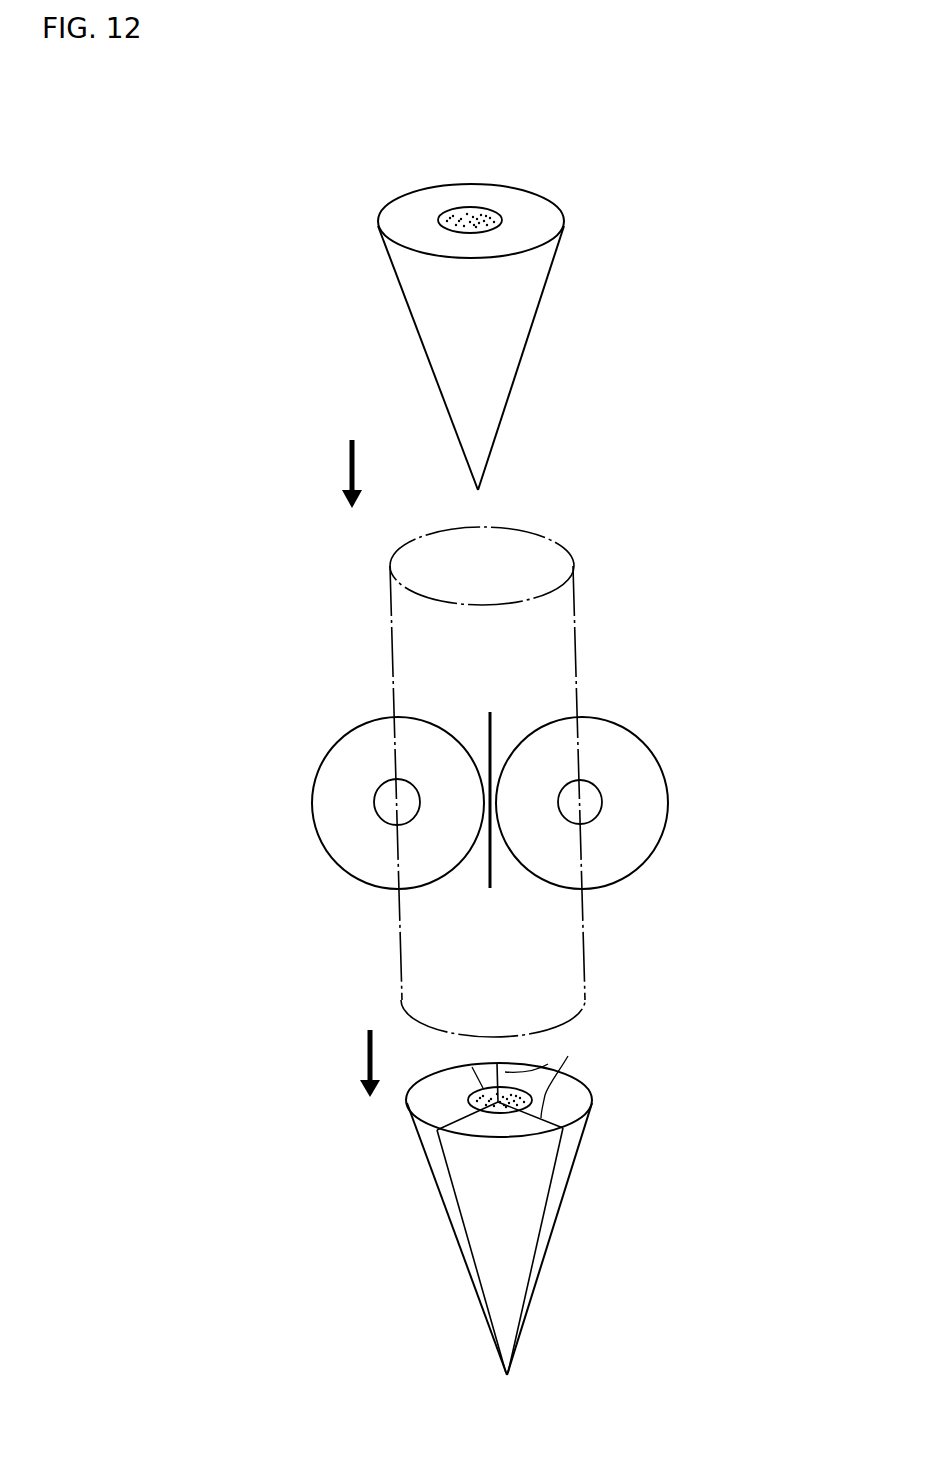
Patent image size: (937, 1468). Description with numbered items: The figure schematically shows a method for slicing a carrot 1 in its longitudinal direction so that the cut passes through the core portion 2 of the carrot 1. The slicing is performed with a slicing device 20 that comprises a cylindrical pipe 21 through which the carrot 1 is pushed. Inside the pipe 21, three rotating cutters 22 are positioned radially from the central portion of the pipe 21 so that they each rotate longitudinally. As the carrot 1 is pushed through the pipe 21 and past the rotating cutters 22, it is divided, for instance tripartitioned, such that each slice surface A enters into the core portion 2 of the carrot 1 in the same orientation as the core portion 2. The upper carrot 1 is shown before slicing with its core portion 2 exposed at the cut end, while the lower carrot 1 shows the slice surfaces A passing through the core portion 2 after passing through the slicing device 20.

The carrot 1 is at (522, 312).
The core portion 2 is at (478, 207).
The slicing device 20 is at (393, 676).
The cylindrical pipe 21 is at (585, 600).
The rotating cutters 22 is at (340, 750).
The slice surface A is at (548, 1064).